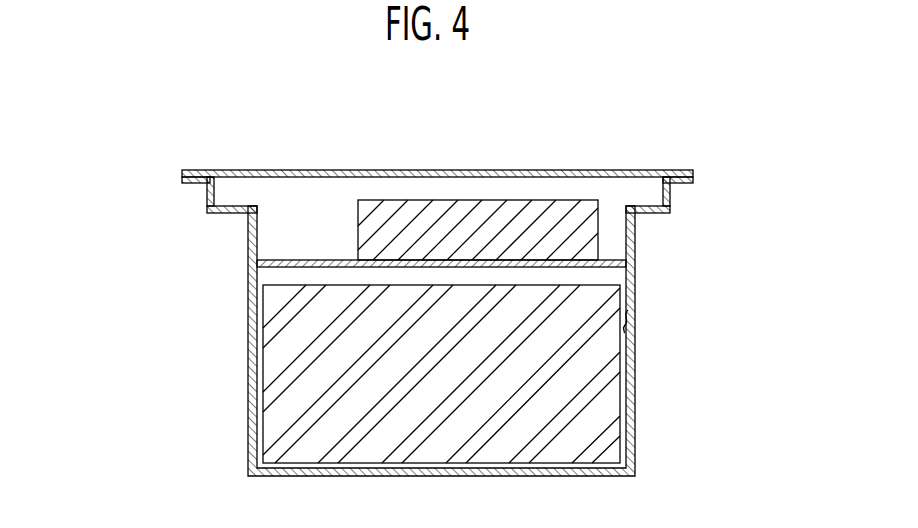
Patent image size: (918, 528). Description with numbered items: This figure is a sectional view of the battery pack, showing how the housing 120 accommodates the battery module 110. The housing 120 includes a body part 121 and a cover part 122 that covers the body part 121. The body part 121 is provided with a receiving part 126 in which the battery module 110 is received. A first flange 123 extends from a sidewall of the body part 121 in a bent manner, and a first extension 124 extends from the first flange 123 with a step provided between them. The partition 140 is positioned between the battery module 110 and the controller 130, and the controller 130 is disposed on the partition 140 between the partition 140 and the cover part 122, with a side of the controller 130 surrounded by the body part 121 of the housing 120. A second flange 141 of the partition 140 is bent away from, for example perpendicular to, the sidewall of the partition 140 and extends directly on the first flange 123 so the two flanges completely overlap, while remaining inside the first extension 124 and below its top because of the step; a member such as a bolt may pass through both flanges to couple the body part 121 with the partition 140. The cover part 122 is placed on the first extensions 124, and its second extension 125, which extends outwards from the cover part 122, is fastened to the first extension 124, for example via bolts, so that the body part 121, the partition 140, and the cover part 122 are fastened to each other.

The battery module 110 is at (630, 390).
The housing 120 is at (100, 248).
The body part 121 is at (240, 336).
The cover part 122 is at (426, 193).
The first flange 123 is at (655, 208).
The first extension 124 is at (679, 180).
The second extension 125 is at (677, 168).
The receiving part 126 is at (629, 318).
The controller 130 is at (473, 237).
The partition 140 is at (300, 244).
The second flange 141 is at (633, 205).